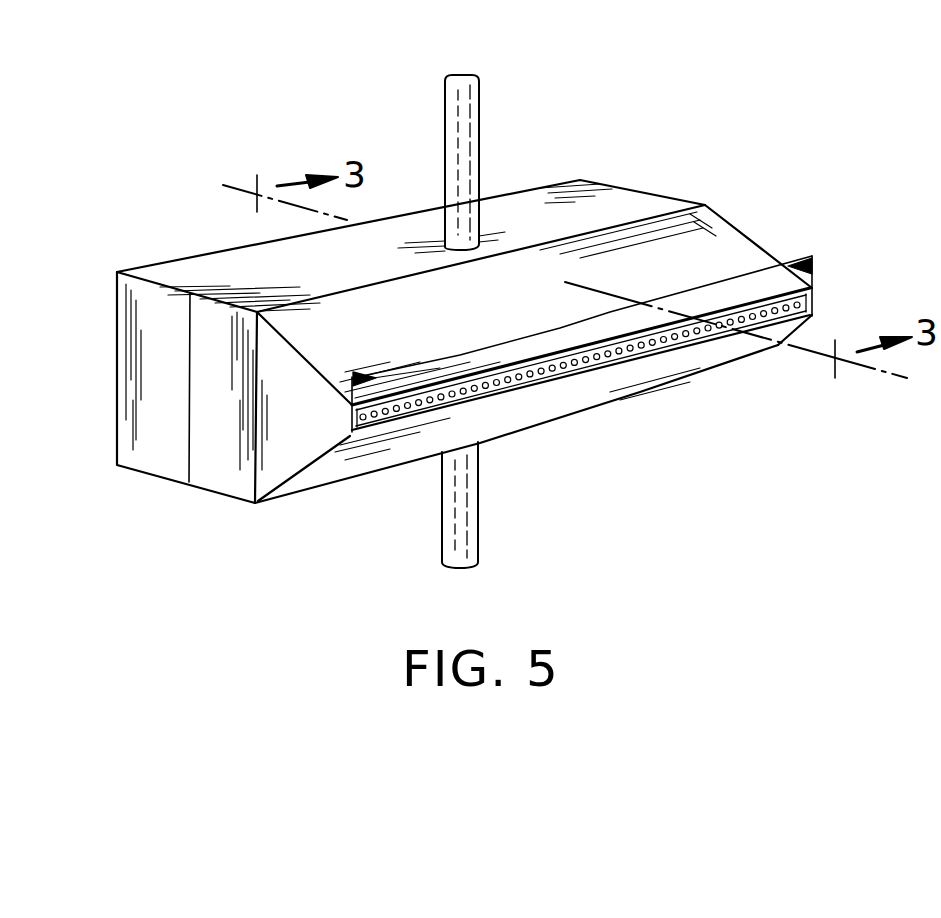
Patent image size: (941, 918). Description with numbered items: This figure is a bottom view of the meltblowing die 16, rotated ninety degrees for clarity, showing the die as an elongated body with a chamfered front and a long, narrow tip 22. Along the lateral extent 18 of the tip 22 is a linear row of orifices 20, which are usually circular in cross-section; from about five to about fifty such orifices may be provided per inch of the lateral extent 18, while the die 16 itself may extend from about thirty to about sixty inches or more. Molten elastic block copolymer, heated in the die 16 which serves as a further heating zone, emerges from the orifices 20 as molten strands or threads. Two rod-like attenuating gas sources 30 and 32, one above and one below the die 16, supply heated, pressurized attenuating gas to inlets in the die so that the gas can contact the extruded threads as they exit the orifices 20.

The meltblowing die 16 is at (203, 430).
The lateral extent 18 is at (757, 273).
The orifices 20 is at (648, 350).
The tip 22 is at (690, 338).
The attenuating gas source 30 is at (472, 145).
The attenuating gas source 32 is at (478, 487).